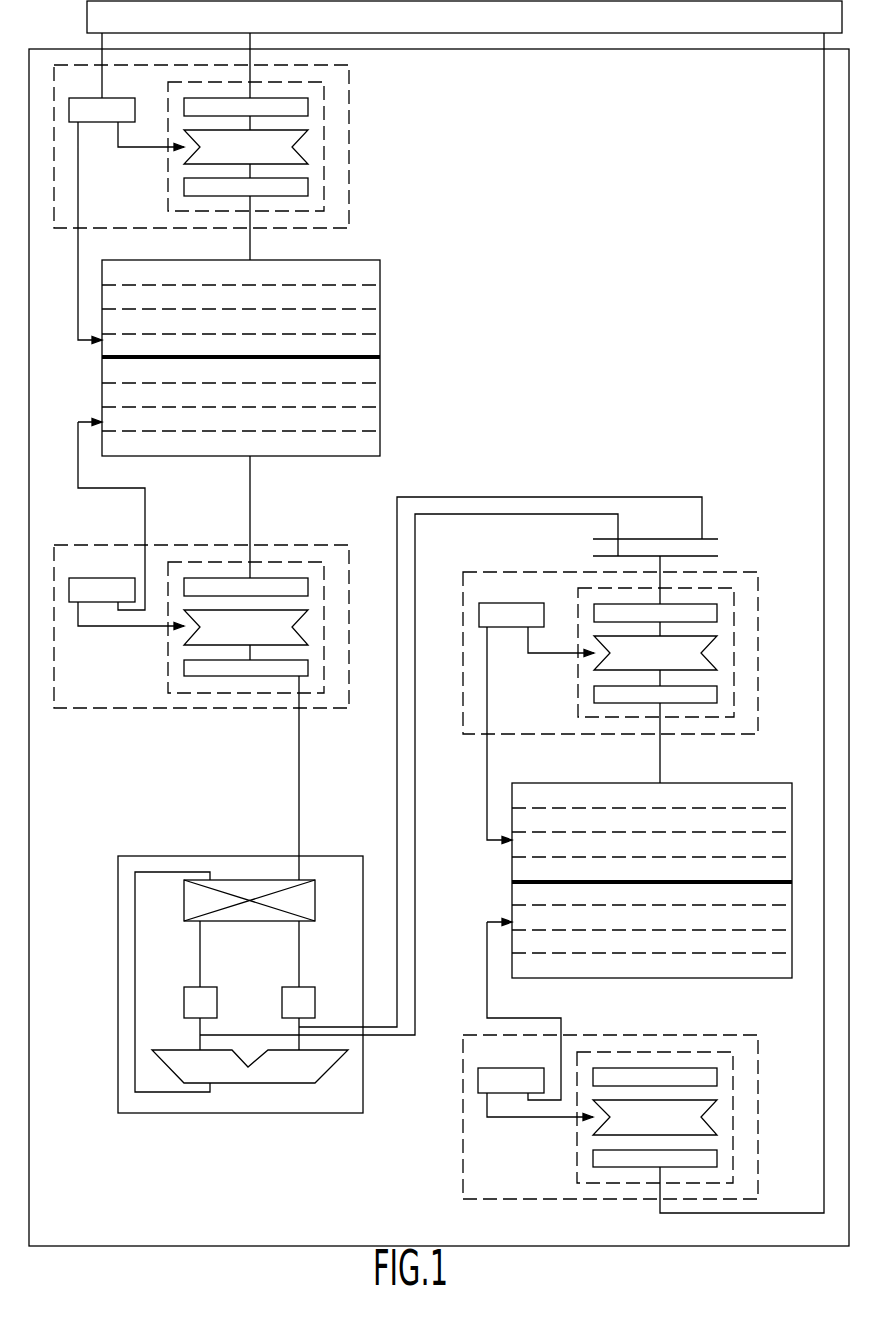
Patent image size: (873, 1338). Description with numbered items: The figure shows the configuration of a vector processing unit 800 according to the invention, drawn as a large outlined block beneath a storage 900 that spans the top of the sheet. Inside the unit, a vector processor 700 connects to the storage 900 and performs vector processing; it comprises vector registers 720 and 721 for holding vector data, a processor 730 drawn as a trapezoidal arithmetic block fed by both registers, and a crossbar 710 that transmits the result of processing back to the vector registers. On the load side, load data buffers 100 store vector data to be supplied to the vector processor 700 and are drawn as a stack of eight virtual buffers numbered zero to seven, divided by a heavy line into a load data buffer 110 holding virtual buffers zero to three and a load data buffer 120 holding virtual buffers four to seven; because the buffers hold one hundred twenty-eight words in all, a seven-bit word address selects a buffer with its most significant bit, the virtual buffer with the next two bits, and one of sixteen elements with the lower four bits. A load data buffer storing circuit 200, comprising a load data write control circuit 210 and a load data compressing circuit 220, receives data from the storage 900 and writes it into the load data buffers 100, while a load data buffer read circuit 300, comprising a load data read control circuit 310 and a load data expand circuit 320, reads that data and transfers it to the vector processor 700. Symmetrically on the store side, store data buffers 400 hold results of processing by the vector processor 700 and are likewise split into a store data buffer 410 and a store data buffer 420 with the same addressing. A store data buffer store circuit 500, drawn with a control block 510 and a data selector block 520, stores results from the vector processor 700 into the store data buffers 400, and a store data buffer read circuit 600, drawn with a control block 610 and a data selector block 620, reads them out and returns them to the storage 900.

The storage 900 is at (87, 14).
The vector processing unit 800 is at (438, 52).
The load data buffers 100 is at (322, 260).
The load data buffer 110 is at (365, 326).
The load data buffer 120 is at (365, 423).
The load data buffer storing circuit 200 is at (349, 126).
The load data write control circuit 210 is at (88, 98).
The load data compressing circuit 220 is at (324, 180).
The load data buffer read circuit 300 is at (310, 545).
The load data read control circuit 310 is at (130, 578).
The load data expand circuit 320 is at (324, 660).
The store data buffers 400 is at (750, 783).
The store data buffer 410 is at (782, 847).
The store data buffer 420 is at (782, 948).
The store data buffer store circuit 500 is at (758, 635).
The store data buffer store control circuit 510 is at (497, 603).
The store data selector circuit 520 is at (734, 686).
The store data buffer read circuit 600 is at (463, 1150).
The store data buffer read control circuit 610 is at (487, 1068).
The store data selector circuit 620 is at (613, 1183).
The vector processor 700 is at (198, 1113).
The crossbar 710 is at (272, 880).
The vector register 720 is at (184, 1000).
The vector register 721 is at (282, 990).
The processor 730 is at (340, 1060).